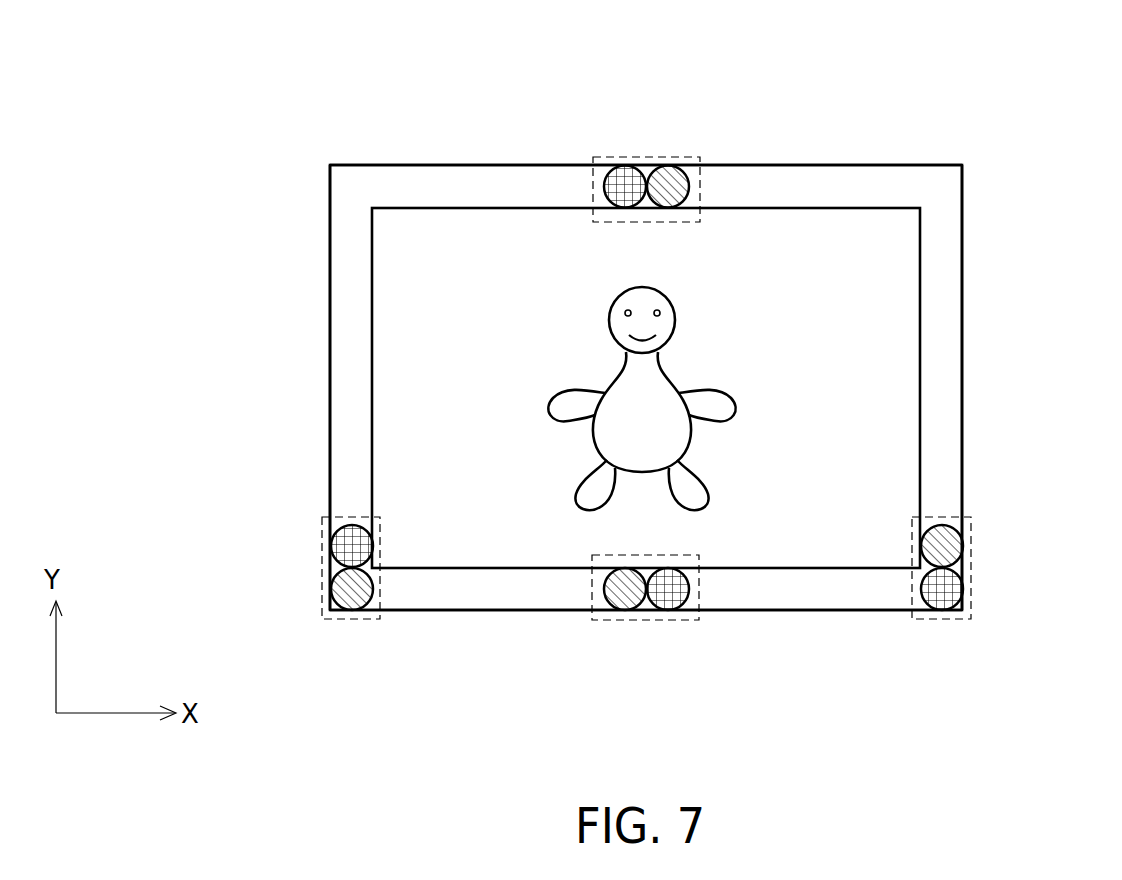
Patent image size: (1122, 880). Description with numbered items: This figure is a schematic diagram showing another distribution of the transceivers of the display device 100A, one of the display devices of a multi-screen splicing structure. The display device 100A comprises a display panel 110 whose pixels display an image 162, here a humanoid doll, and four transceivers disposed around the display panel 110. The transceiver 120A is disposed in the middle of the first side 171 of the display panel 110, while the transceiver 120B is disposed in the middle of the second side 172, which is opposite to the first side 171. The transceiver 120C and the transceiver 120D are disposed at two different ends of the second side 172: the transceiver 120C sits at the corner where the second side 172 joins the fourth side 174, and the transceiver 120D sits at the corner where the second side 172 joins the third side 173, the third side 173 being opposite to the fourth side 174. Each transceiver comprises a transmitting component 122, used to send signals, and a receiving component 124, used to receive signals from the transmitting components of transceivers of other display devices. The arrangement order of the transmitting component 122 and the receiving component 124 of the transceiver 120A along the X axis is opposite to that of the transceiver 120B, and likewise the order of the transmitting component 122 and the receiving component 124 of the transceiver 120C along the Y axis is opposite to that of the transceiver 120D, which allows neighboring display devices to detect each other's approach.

The display device 100A is at (945, 80).
The display panel 110 is at (883, 288).
The transceiver 120A is at (593, 157).
The transceiver 120B is at (592, 620).
The transceiver 120C is at (971, 516).
The transceiver 120D is at (322, 518).
The transmitting component 122 is at (668, 183).
The receiving component 124 is at (625, 183).
The image 162 is at (609, 320).
The first side 171 is at (758, 176).
The second side 172 is at (785, 600).
The third side 173 is at (335, 376).
The fourth side 174 is at (958, 375).